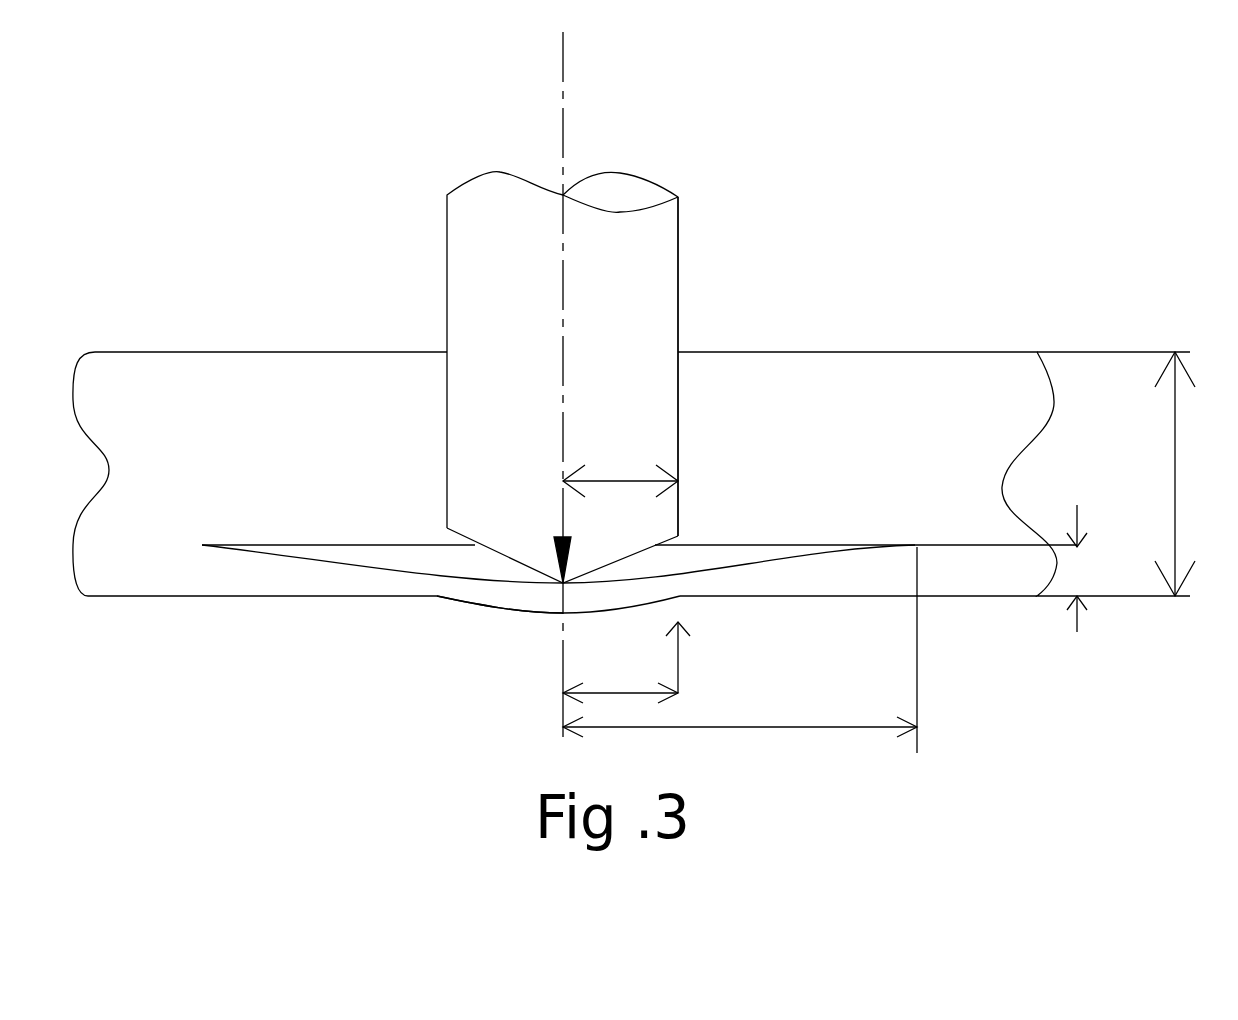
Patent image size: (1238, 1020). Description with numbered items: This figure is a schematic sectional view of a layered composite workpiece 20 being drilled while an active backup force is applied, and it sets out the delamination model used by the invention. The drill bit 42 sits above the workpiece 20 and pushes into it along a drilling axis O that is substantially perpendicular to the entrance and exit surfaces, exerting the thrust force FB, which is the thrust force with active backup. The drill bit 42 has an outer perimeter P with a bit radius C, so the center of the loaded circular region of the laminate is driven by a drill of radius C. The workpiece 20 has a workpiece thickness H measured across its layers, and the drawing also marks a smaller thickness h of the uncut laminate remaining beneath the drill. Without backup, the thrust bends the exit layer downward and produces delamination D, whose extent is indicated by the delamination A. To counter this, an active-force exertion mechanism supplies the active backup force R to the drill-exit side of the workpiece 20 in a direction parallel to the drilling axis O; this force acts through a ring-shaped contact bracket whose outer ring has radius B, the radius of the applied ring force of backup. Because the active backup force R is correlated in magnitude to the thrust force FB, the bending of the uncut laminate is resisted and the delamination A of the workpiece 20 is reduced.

The workpiece 20 is at (342, 388).
The drill bit 42 is at (663, 182).
The outer perimeter P is at (678, 303).
The drilling axis O is at (535, 384).
The thrust force with active backup FB is at (597, 348).
The bit radius C is at (620, 461).
The workpiece thickness H is at (1162, 474).
The deformed layer thickness h is at (1002, 568).
The radius of the applied ring force of backup B is at (626, 662).
The extent of delamination A is at (740, 650).
The delamination D is at (388, 563).
The active backup force R is at (443, 597).